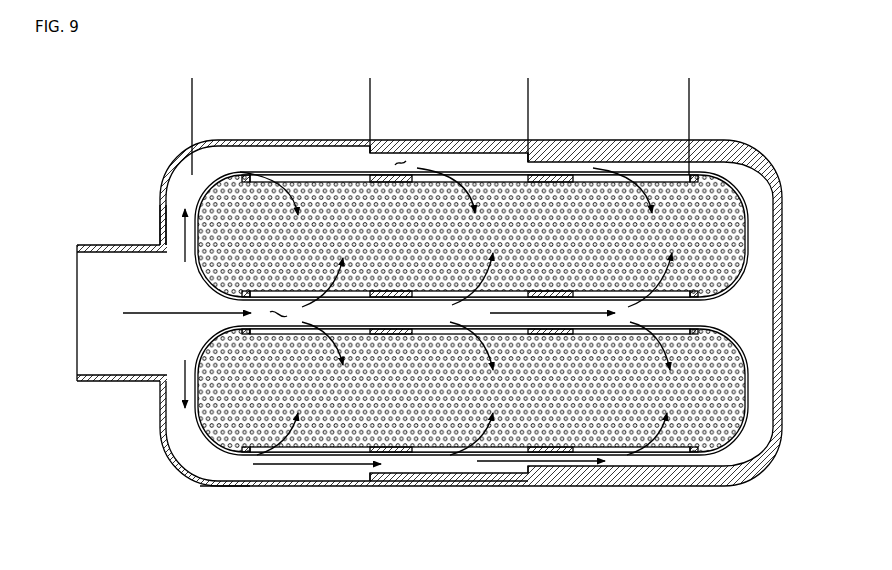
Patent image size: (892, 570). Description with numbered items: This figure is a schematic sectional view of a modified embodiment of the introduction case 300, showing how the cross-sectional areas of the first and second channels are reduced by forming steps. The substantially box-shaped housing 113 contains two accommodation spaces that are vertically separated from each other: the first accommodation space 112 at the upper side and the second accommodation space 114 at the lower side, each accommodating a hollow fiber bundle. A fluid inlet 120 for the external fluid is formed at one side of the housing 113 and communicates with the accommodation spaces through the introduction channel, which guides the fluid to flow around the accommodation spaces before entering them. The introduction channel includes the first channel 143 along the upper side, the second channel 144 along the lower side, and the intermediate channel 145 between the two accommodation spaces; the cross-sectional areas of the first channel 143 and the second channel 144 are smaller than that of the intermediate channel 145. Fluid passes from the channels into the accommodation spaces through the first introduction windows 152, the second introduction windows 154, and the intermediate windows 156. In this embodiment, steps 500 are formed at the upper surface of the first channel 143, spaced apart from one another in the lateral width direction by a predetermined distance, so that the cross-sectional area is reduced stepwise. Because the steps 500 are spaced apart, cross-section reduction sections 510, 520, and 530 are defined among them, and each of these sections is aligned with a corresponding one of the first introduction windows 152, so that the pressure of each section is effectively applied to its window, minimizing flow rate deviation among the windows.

The exhaust gas treatment device 300 is at (158, 140).
The first accommodation space 112 is at (193, 207).
The housing 113 is at (160, 220).
The second accommodation space 114 is at (238, 423).
The fluid inlet 120 is at (78, 313).
The first channel 143 is at (402, 162).
The second channel 144 is at (405, 478).
The intermediate channel 145 is at (270, 317).
The first introduction windows 152 is at (315, 177).
The second introduction windows 154 is at (308, 450).
The intermediate windows 156 is at (672, 297).
The steps 500 is at (368, 148).
The cross-section reduction section 510 is at (369, 85).
The cross-section reduction section 520 is at (527, 85).
The cross-section reduction section 530 is at (688, 85).